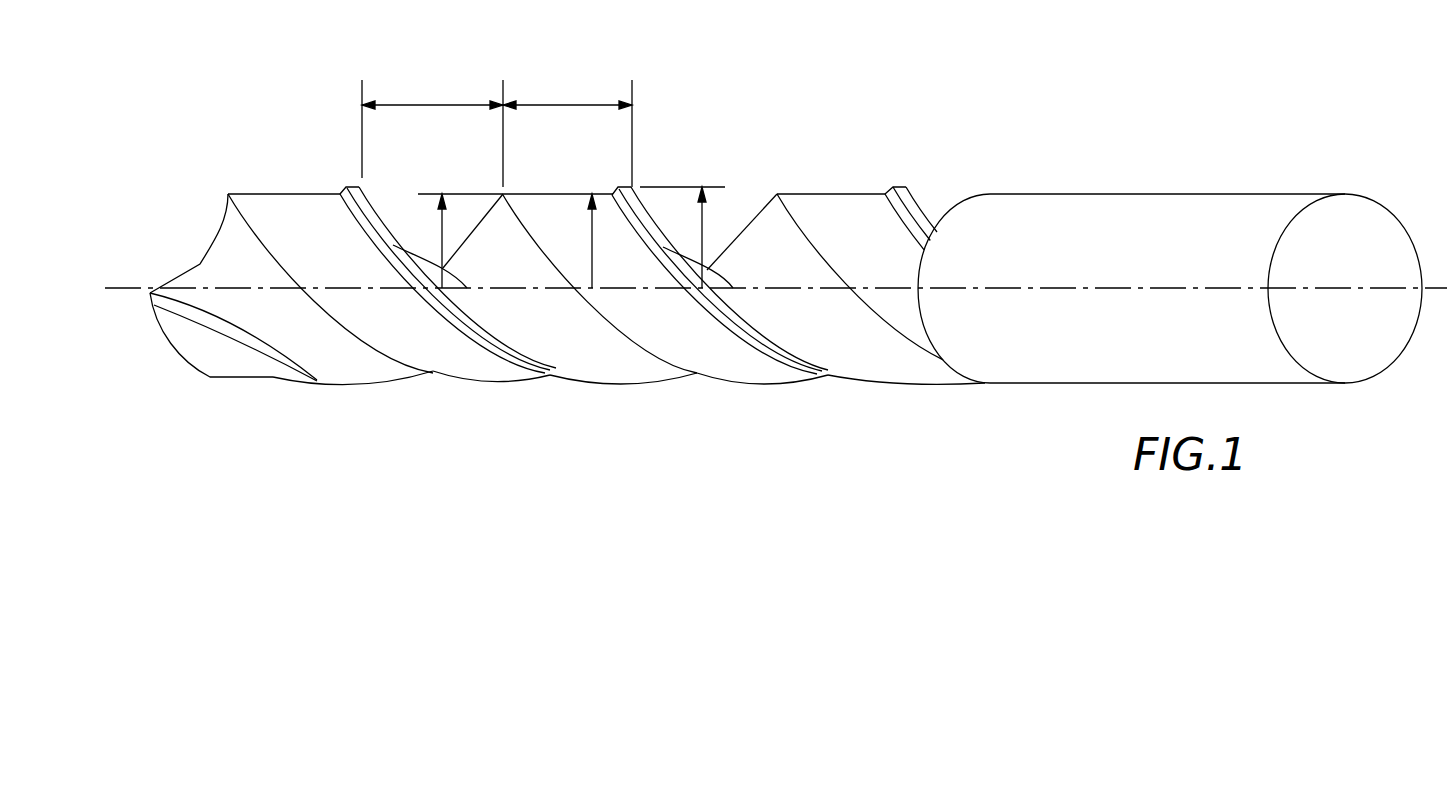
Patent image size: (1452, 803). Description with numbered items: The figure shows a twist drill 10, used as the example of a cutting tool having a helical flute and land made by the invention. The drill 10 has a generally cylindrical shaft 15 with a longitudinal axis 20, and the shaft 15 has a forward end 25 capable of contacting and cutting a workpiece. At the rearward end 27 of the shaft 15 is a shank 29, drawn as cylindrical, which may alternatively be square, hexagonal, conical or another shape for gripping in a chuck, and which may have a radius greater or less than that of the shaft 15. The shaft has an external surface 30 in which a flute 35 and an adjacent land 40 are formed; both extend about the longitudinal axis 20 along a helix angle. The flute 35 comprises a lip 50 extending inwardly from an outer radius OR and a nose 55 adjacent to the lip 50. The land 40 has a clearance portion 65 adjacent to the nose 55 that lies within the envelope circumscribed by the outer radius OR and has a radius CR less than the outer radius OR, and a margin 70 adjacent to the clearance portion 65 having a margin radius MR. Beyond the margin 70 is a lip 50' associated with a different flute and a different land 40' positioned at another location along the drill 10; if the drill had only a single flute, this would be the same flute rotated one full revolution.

The twist drill 10 is at (961, 72).
The shaft 15 is at (1062, 205).
The longitudinal axis 20 is at (1440, 285).
The forward end 25 is at (170, 280).
The rearward end 27 is at (1232, 205).
The shank 29 is at (1124, 194).
The external surface 30 is at (1062, 363).
The flute 35 is at (425, 104).
The land 40 is at (567, 117).
The land 40' is at (824, 258).
The lip 50 is at (448, 258).
The lip 50' is at (720, 262).
The nose 55 is at (488, 206).
The clearance portion 65 is at (547, 194).
The margin 70 is at (632, 176).
The margin radius MR is at (443, 237).
The clearance radius CR is at (588, 253).
The outer radius OR is at (705, 237).